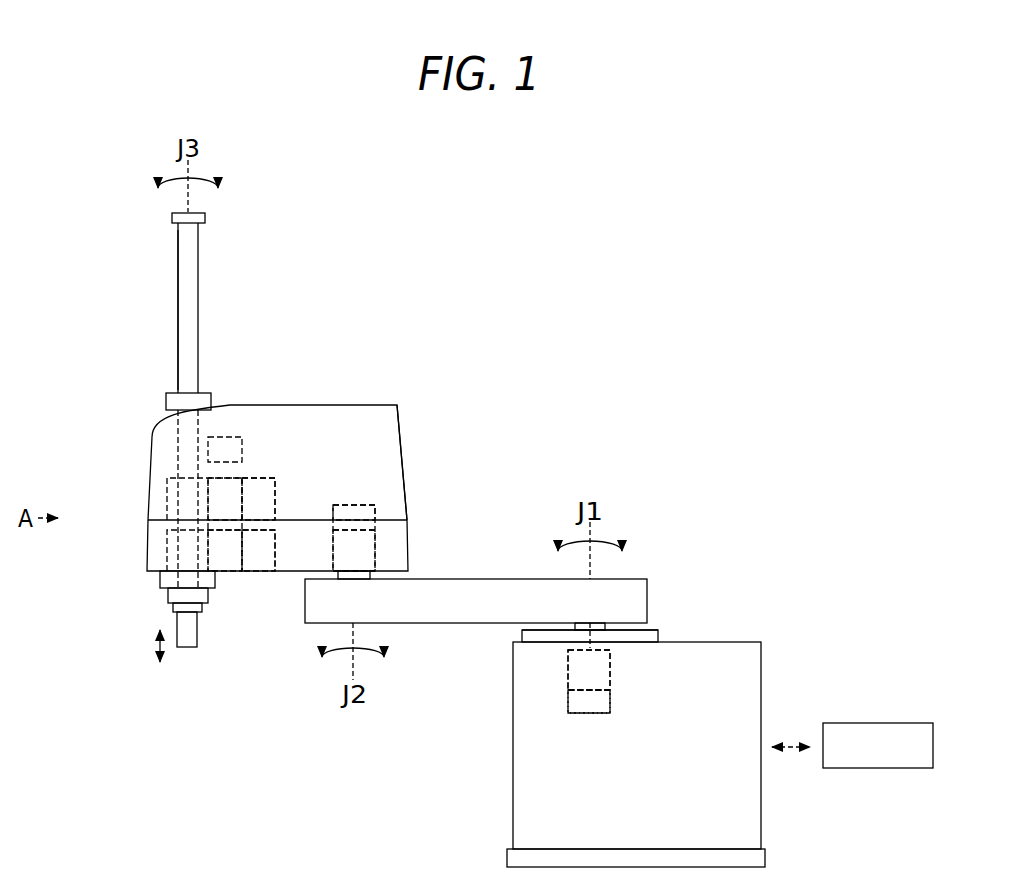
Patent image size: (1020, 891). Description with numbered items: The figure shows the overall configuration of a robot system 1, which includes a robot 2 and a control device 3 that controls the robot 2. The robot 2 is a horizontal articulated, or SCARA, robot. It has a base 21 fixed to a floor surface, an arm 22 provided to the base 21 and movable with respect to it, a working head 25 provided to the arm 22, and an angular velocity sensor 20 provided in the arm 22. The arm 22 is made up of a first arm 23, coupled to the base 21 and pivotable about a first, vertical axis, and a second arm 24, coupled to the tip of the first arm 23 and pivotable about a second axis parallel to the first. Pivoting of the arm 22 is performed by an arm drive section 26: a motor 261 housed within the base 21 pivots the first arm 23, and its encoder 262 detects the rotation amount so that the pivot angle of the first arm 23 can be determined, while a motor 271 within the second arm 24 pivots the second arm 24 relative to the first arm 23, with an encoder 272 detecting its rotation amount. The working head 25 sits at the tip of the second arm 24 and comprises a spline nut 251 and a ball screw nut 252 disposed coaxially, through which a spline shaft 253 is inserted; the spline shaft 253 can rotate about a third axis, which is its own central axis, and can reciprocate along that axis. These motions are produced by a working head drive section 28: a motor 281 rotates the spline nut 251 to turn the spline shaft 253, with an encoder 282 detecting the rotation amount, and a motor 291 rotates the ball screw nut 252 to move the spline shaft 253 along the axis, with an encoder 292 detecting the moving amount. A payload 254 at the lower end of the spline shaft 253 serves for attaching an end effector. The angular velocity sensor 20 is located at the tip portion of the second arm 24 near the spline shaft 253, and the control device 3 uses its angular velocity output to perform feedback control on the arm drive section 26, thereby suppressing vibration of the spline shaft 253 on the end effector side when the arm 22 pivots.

The robot system 1 is at (694, 343).
The robot 2 is at (342, 396).
The control device 3 is at (878, 768).
The angular velocity sensor 20 is at (215, 453).
The base 21 is at (513, 757).
The arm 22 is at (445, 634).
The first arm 23 is at (632, 579).
The second arm 24 is at (403, 460).
The working head 25 is at (168, 259).
The arm drive section 26 is at (695, 648).
The working head drive section 28 is at (327, 366).
The spline nut 251 is at (167, 503).
The ball screw nut 252 is at (167, 552).
The spline shaft 253 is at (188, 314).
The payload 254 is at (190, 648).
The motor 261 is at (592, 670).
The encoder 262 is at (592, 703).
The motor 271 is at (363, 552).
The encoder 272 is at (363, 512).
The motor 281 is at (225, 490).
The encoder 282 is at (257, 488).
The motor 291 is at (225, 553).
The encoder 292 is at (257, 553).